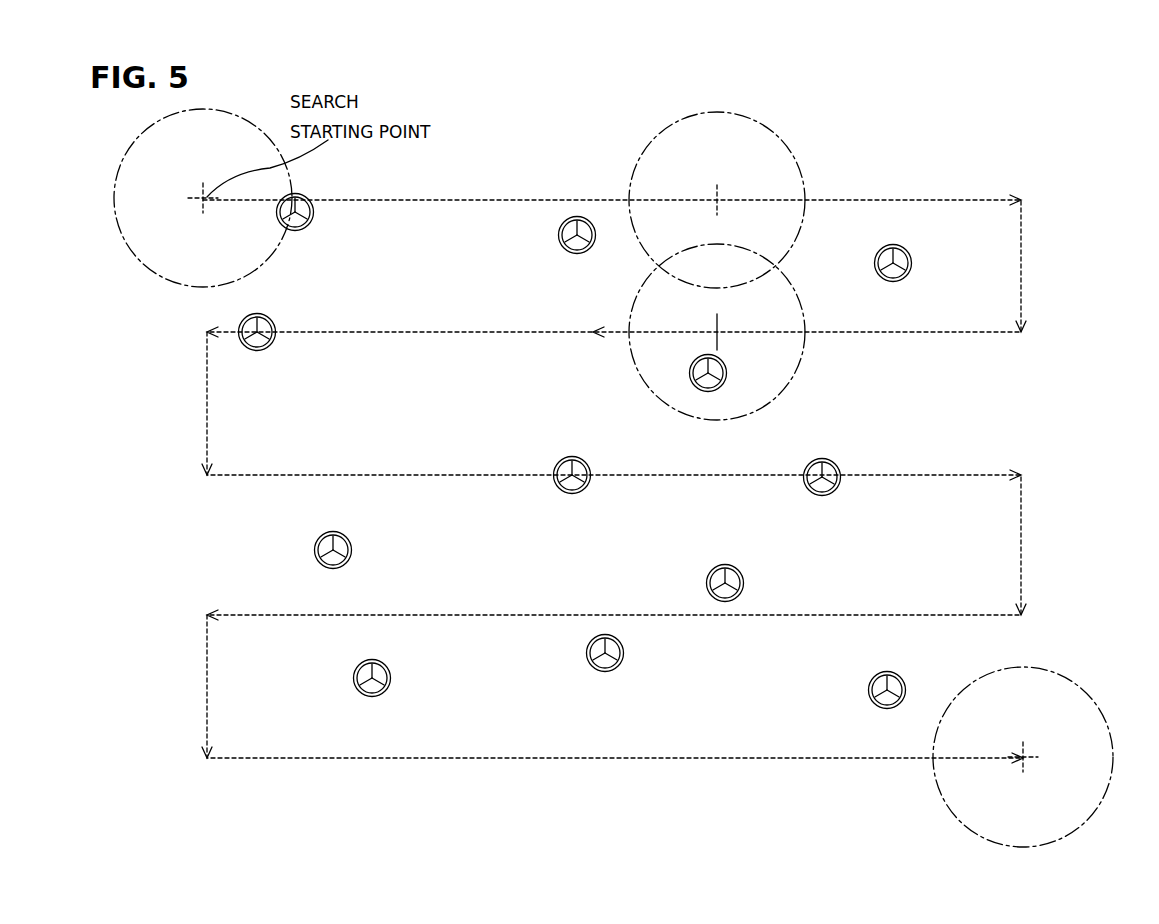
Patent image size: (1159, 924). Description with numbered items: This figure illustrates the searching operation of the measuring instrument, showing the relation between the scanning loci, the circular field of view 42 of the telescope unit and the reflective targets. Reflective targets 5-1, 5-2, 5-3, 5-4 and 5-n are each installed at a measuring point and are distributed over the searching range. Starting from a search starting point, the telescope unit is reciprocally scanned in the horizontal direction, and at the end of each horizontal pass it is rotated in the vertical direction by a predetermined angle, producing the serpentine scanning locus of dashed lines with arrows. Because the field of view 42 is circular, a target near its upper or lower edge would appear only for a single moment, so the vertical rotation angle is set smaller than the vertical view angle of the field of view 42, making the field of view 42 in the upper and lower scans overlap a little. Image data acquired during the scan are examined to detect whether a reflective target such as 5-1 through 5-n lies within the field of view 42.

The reflective target 5-1 is at (314, 216).
The reflective target 5-2 is at (566, 220).
The reflective target 5-3 is at (911, 259).
The reflective target 5-4 is at (690, 378).
The reflective target 5-n is at (868, 688).
The field of view 42 is at (258, 284).